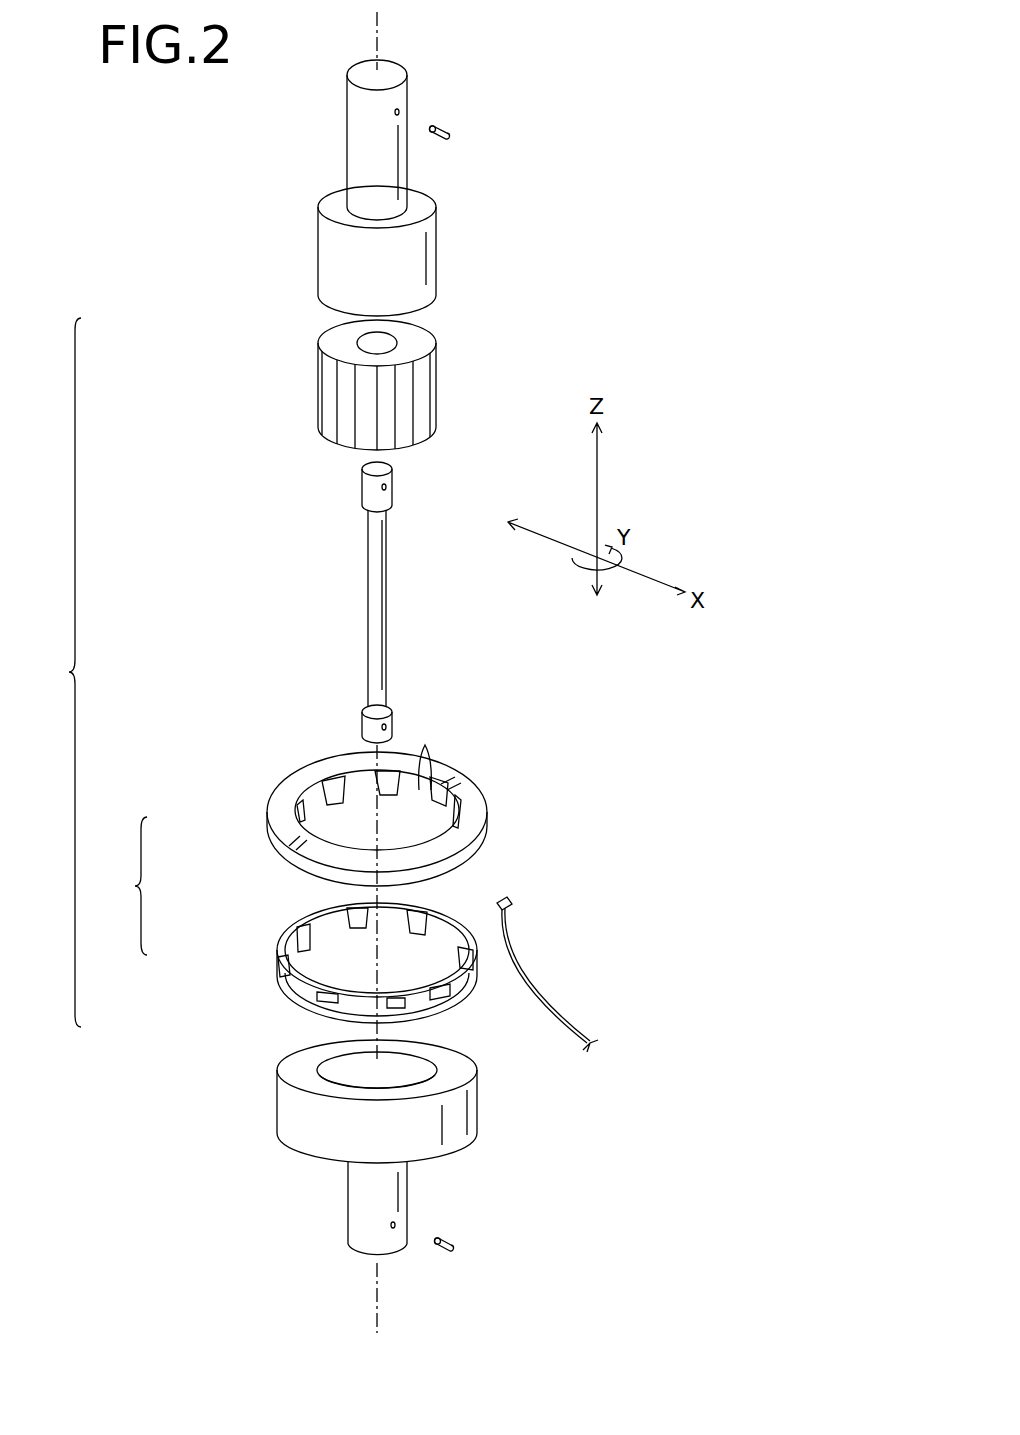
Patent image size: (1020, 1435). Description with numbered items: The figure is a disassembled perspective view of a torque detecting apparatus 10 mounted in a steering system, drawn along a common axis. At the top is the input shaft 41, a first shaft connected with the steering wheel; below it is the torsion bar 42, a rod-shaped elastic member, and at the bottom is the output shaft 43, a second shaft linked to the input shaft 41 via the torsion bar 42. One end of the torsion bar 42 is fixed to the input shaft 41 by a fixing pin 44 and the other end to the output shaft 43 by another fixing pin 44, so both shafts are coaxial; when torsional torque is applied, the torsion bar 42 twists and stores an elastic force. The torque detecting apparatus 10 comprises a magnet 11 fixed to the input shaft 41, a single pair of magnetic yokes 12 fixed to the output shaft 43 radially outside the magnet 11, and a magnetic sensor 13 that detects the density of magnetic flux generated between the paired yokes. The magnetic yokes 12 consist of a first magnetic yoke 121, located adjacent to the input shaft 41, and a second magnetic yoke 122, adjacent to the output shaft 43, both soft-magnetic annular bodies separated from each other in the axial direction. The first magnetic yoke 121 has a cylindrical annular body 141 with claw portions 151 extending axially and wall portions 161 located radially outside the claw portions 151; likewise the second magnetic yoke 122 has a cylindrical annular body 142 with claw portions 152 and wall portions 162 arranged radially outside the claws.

The torque detecting apparatus 10 is at (57, 672).
The magnet 11 is at (318, 390).
The magnetic yokes 12 is at (121, 886).
The magnetic sensor 13 is at (512, 897).
The input shaft 41 is at (360, 104).
The torsion bar 42 is at (368, 581).
The output shaft 43 is at (360, 1210).
The fixing pin 44 is at (448, 132).
The first magnetic yoke 121 is at (365, 797).
The second magnetic yoke 122 is at (338, 960).
The cylindrical annular body 141 is at (305, 777).
The cylindrical annular body 142 is at (312, 925).
The claw portions 151 is at (432, 762).
The claw portions 152 is at (442, 926).
The wall portions 161 is at (478, 851).
The wall portions 162 is at (452, 999).